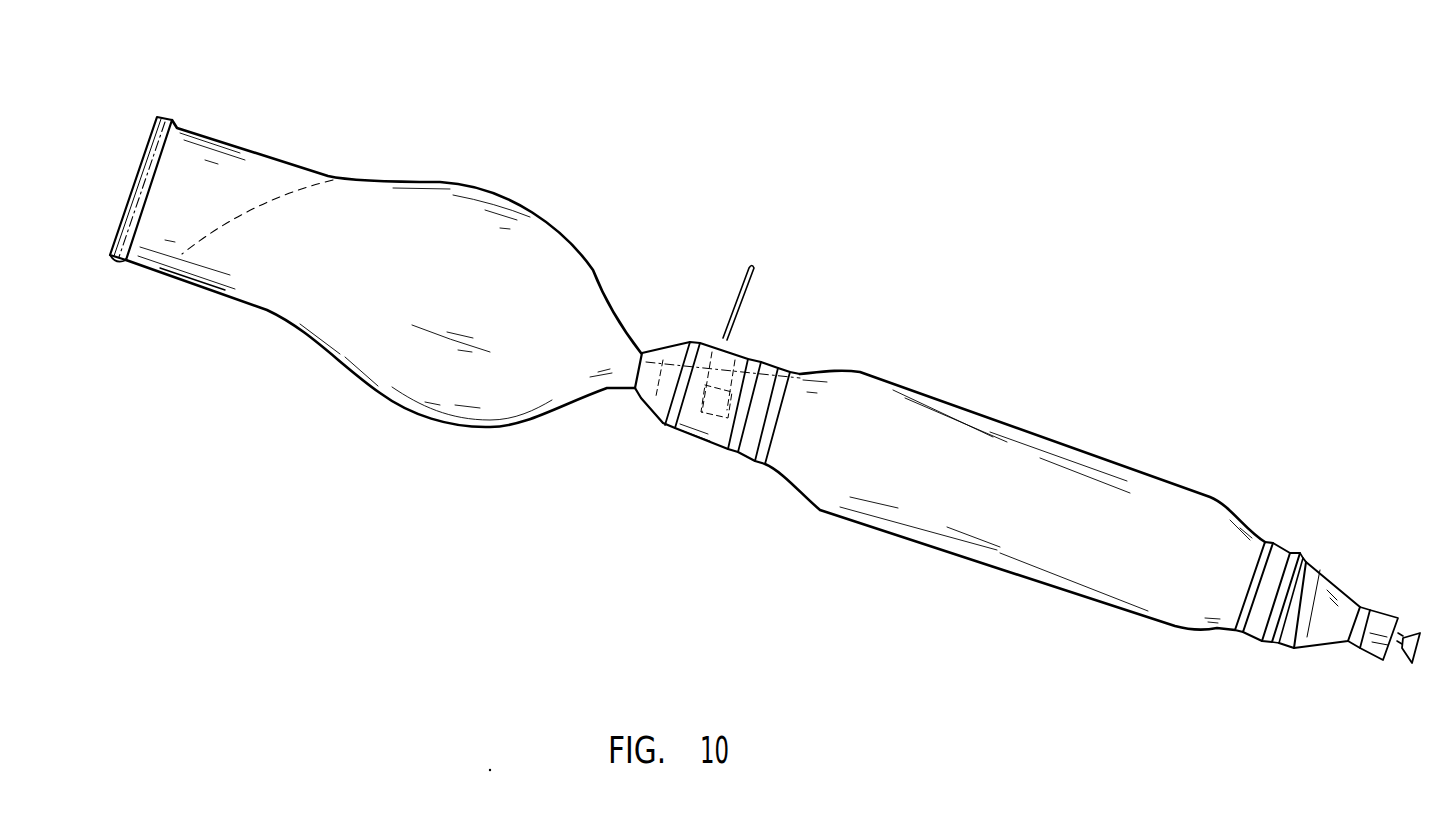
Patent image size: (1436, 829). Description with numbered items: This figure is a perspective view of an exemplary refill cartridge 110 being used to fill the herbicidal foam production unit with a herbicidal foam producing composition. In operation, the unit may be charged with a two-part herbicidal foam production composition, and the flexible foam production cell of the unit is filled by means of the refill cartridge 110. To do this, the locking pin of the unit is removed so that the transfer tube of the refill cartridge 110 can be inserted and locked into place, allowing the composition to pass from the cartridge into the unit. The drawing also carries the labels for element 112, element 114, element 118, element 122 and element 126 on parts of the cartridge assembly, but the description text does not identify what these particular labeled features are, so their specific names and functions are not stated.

The refill cartridge 110 is at (474, 150).
The mouthpiece rim 112 is at (176, 128).
The mouthpiece 114 is at (217, 293).
The connector assembly 118 is at (678, 433).
The bulb chamber wall 122 is at (363, 318).
The inner liner 126 is at (347, 393).